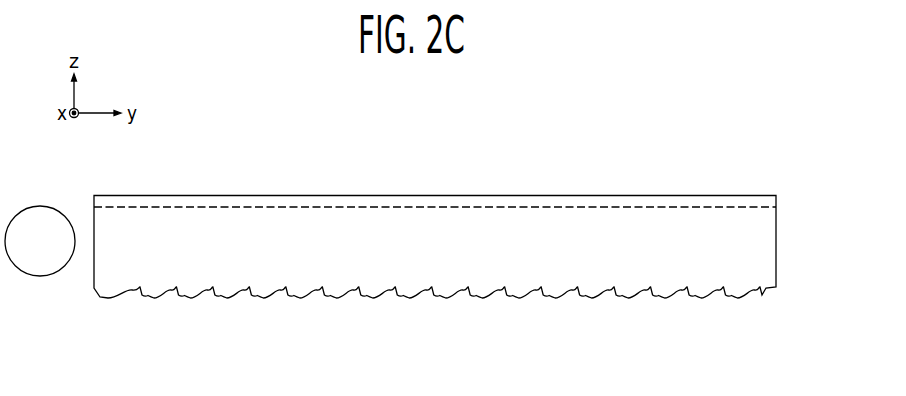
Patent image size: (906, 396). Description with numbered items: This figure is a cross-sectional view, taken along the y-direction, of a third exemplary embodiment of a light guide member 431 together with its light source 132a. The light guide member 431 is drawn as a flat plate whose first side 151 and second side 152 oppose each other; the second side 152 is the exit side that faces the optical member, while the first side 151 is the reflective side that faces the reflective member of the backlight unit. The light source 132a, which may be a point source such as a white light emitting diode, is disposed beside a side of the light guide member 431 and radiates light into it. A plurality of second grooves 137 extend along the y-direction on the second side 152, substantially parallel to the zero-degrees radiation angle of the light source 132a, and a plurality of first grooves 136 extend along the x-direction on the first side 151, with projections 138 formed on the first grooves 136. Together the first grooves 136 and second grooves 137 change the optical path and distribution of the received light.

The light source 132a is at (38, 218).
The light guide member 431 is at (767, 232).
The second grooves 137 is at (233, 205).
The first grooves 136 is at (173, 292).
The projections 138 is at (233, 292).
The second side 152 is at (704, 195).
The first side 151 is at (704, 297).